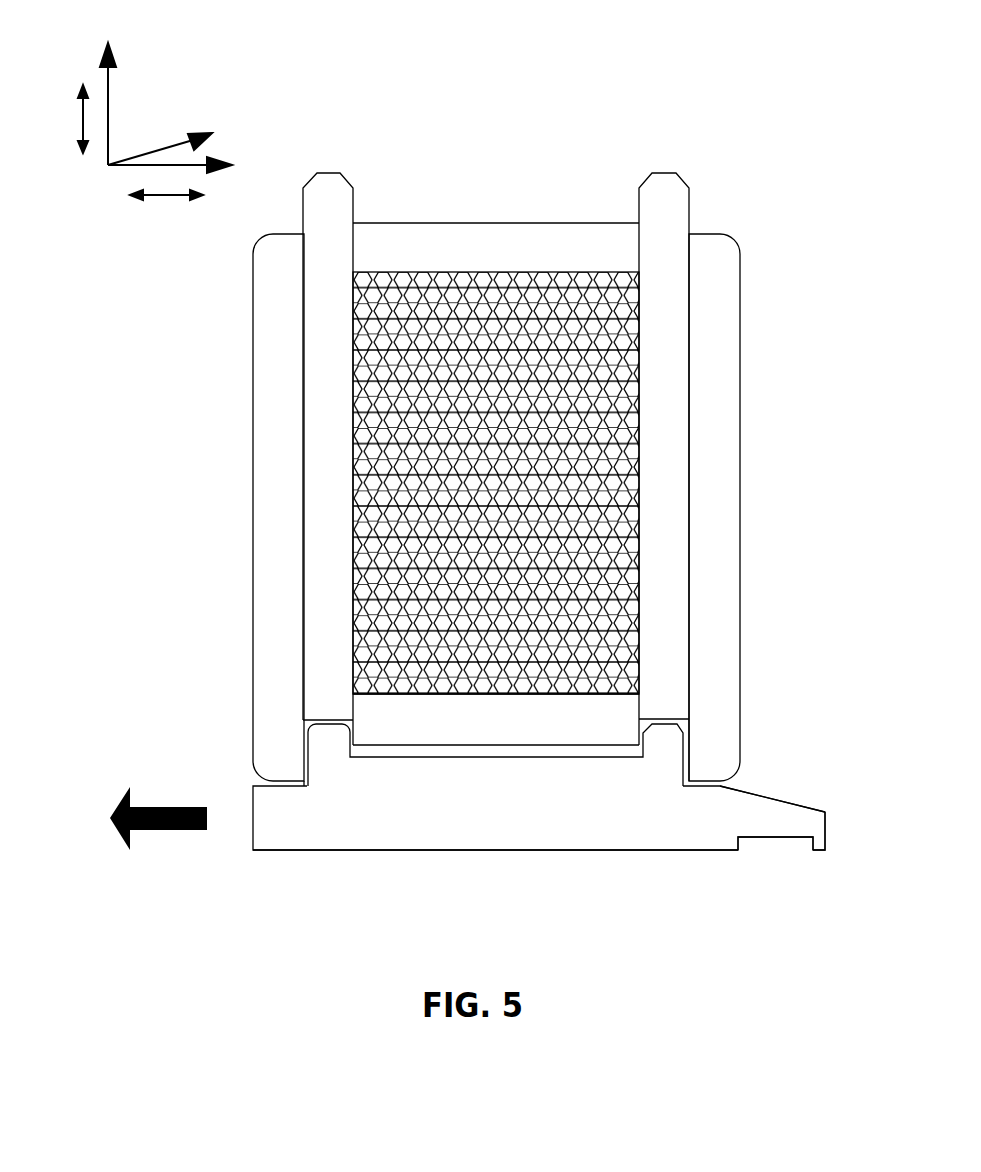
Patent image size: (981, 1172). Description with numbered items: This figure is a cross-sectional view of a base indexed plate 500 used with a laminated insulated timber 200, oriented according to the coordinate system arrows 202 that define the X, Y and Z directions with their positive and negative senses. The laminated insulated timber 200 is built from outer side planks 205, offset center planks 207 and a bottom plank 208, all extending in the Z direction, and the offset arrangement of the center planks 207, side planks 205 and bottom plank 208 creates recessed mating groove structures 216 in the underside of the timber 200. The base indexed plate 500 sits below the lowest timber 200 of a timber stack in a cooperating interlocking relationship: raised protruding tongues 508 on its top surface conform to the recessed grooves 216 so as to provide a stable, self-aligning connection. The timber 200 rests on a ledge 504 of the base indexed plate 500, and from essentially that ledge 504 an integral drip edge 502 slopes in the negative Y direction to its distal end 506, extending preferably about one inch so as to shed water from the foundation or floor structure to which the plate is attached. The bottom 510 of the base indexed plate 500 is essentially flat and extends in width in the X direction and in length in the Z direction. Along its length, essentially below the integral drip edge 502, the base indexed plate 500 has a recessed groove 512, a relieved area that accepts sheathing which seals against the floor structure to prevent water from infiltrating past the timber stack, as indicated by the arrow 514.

The laminated insulated timber 200 is at (513, 479).
The coordinate system arrows 202 is at (285, 124).
The side planks 205 is at (275, 550).
The center planks 207 is at (323, 473).
The bottom plank 208 is at (588, 717).
The mating groove structures 216 is at (319, 698).
The base indexed plate 500 is at (581, 826).
The integral drip edge 502 is at (787, 797).
The ledge 504 is at (663, 749).
The distal end 506 is at (827, 813).
The protruding tongues 508 is at (323, 745).
The bottom 510 is at (572, 850).
The recessed groove 512 is at (772, 858).
The arrow 514 is at (147, 830).